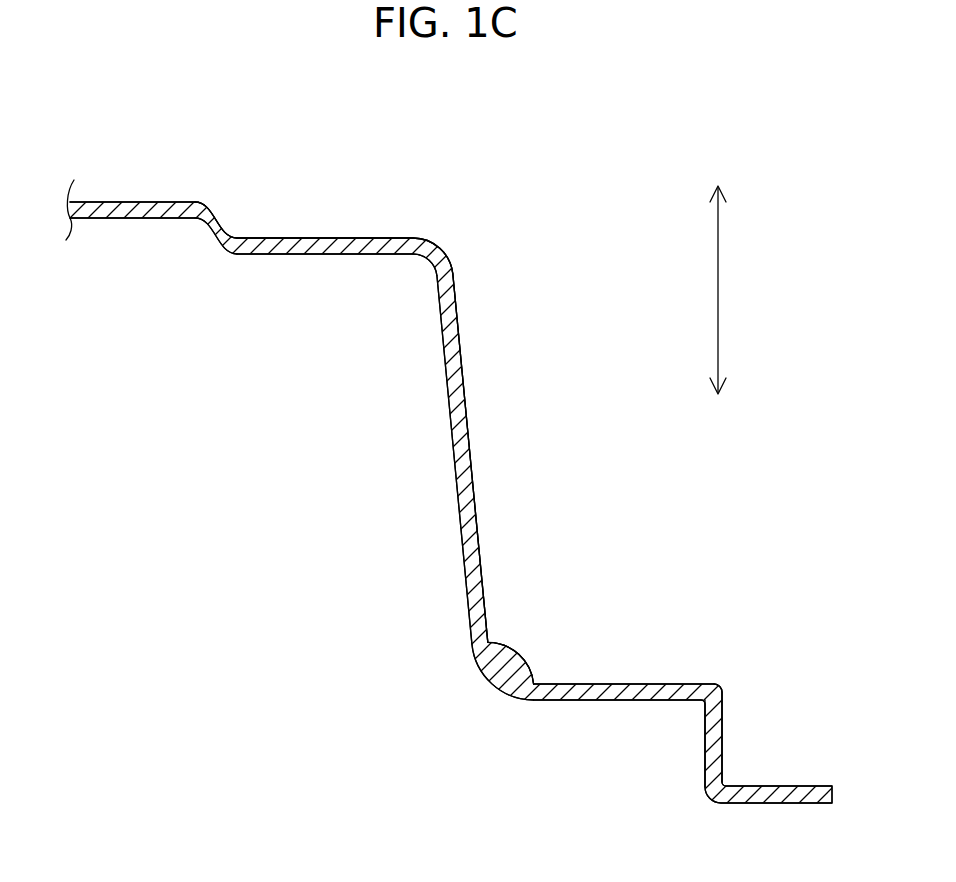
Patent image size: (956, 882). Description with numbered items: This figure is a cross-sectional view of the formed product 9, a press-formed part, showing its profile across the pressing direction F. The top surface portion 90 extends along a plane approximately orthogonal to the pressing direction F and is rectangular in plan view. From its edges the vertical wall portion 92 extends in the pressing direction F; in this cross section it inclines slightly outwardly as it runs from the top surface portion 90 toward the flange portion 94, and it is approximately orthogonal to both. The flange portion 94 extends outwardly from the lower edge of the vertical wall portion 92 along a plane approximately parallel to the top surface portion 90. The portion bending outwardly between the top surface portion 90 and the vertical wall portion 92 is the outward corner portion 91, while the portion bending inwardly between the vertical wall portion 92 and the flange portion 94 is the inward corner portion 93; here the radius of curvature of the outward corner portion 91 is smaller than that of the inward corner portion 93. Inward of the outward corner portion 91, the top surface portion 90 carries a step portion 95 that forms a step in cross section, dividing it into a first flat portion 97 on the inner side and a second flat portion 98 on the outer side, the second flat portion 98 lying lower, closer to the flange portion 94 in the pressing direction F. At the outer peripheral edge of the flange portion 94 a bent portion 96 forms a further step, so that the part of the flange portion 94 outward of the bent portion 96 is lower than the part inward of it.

The formed product 9 is at (618, 158).
The top surface portion 90 is at (375, 164).
The outward corner portion 91 is at (428, 243).
The vertical wall portion 92 is at (466, 451).
The inward corner portion 93 is at (514, 672).
The flange portion 94 is at (683, 617).
The step portion 95 is at (218, 221).
The bent portion 96 is at (710, 686).
The first flat portion 97 is at (135, 201).
The second flat portion 98 is at (315, 238).
The pressing direction F is at (718, 283).